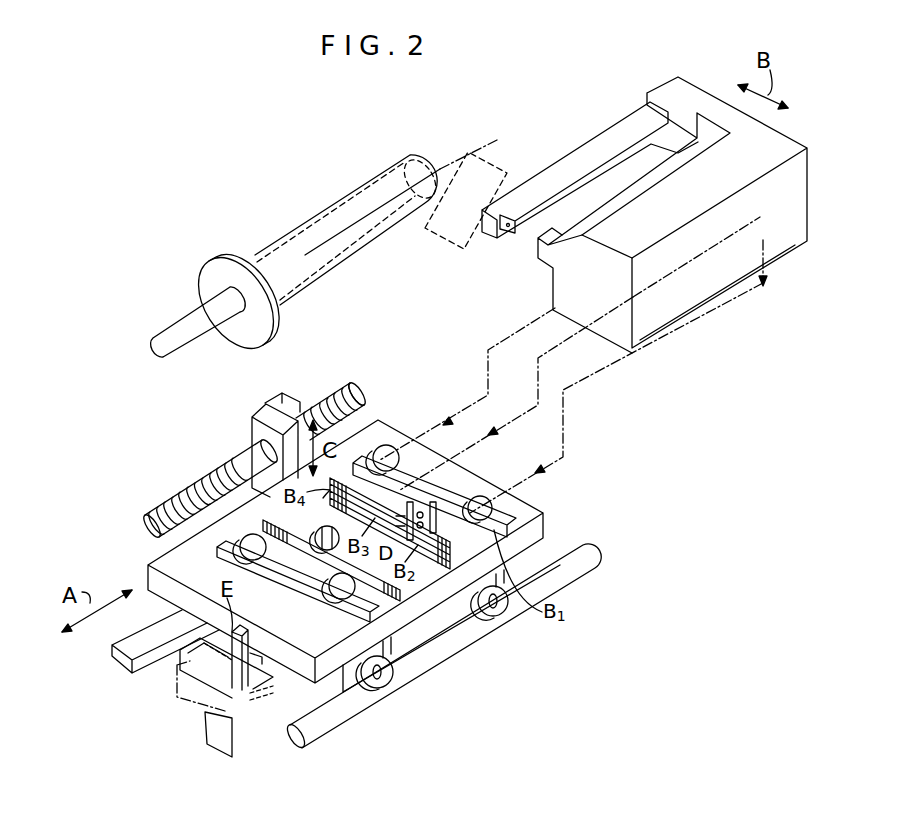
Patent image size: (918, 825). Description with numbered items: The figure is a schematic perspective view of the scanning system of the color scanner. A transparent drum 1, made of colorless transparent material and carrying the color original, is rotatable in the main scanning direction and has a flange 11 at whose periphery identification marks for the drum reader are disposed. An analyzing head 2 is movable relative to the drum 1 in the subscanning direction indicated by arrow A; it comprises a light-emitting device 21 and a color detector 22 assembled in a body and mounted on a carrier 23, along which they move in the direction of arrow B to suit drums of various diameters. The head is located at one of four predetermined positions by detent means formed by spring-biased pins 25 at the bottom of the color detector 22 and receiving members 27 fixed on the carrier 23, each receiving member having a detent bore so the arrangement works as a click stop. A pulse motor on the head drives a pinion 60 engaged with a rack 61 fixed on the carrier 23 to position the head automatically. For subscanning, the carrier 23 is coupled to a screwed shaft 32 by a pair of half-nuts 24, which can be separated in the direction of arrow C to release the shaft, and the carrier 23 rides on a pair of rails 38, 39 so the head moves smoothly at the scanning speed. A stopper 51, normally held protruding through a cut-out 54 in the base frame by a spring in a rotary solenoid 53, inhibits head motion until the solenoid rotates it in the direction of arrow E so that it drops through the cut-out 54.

The transparent drum 1 is at (328, 220).
The flange 11 is at (218, 253).
The analyzing head 2 is at (697, 72).
The light-emitting device 21 is at (578, 150).
The color detector 22 is at (562, 272).
The carrier 23 is at (402, 618).
The half-nuts 24 is at (278, 402).
The pins 25 is at (412, 500).
The receiving members 27 is at (490, 618).
The screwed shaft 32 is at (218, 463).
The rail 38 is at (120, 660).
The rail 39 is at (325, 723).
The stopper 51 is at (248, 672).
The rotary solenoid 53 is at (215, 732).
The cut-out 54 is at (203, 628).
The pinion 60 is at (303, 557).
The rack 61 is at (332, 585).